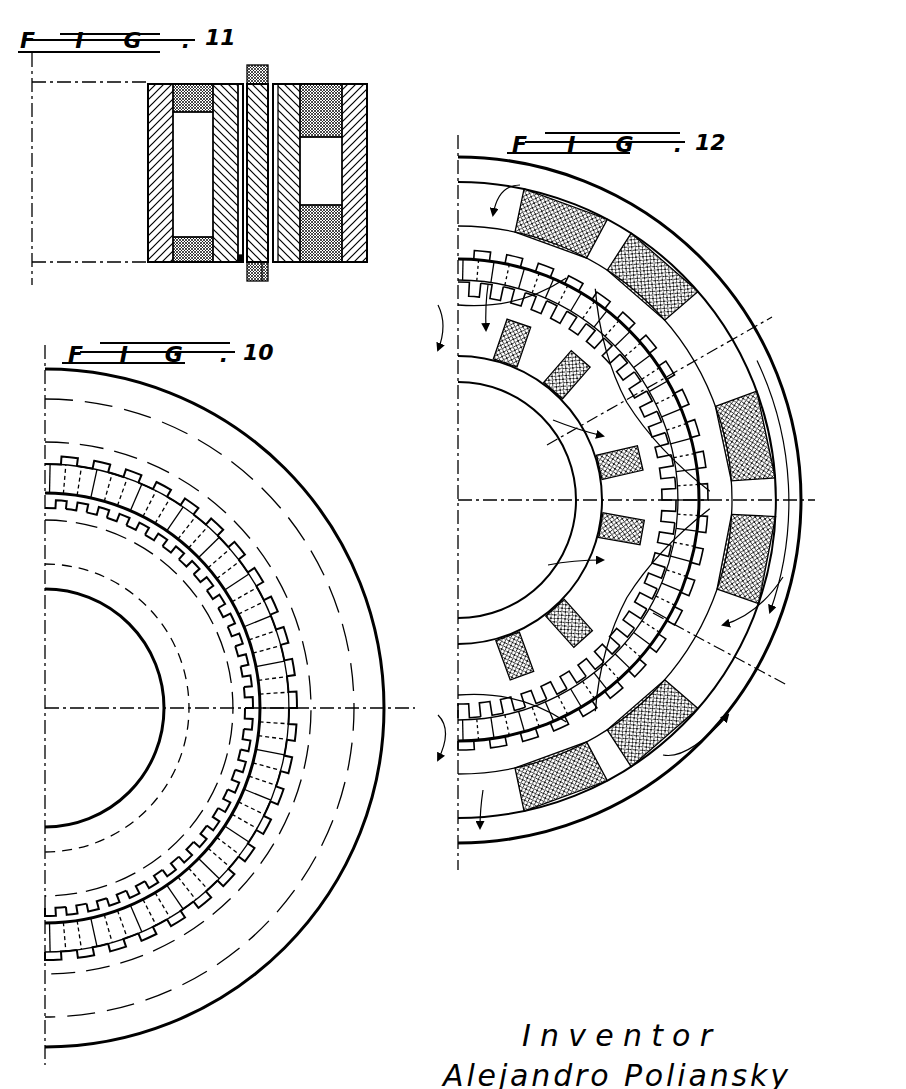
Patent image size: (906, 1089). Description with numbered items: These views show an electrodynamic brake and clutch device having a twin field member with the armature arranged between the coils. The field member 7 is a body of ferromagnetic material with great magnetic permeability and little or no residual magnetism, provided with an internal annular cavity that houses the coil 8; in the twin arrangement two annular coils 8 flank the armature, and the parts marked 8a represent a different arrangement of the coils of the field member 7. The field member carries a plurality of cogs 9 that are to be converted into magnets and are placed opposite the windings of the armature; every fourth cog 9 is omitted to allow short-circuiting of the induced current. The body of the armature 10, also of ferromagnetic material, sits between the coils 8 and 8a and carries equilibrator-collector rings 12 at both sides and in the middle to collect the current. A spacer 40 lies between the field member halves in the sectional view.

In FIG. 11, the field member 7 is at (186, 106).
In FIG. 10, the field member 7 is at (214, 708).
In FIG. 12, the field member 7 is at (629, 500).
In FIG. 11, the coil 8 is at (192, 256).
In FIG. 10, the coil 8 is at (199, 708).
In FIG. 11, the coils of the field member 8a is at (195, 84).
In FIG. 12, the coils of the field member 8a is at (634, 500).
In FIG. 11, the cogs 9 is at (238, 262).
In FIG. 10, the cogs 9 is at (197, 709).
In FIG. 12, the cogs 9 is at (623, 501).
In FIG. 11, the armature body 10 is at (268, 88).
In FIG. 10, the armature body 10 is at (215, 708).
In FIG. 12, the armature body 10 is at (581, 500).
In FIG. 11, the equilibrator-collector rings 12 is at (258, 68).
In FIG. 10, the equilibrator-collector rings 12 is at (226, 708).
In FIG. 12, the equilibrator-collector rings 12 is at (584, 500).
In FIG. 11, the spacer 40 is at (265, 257).